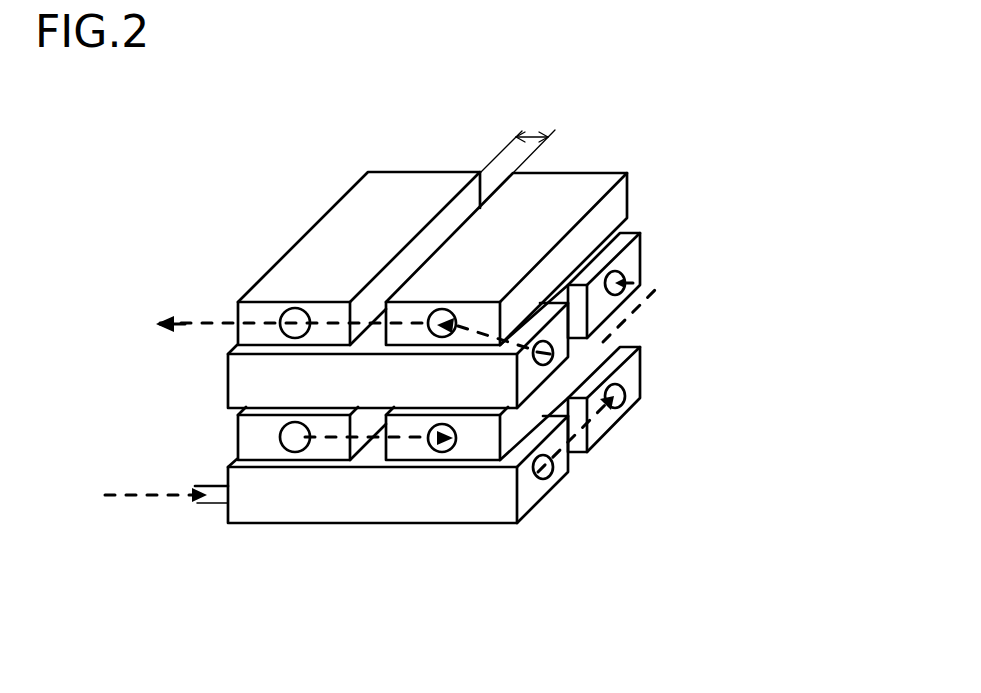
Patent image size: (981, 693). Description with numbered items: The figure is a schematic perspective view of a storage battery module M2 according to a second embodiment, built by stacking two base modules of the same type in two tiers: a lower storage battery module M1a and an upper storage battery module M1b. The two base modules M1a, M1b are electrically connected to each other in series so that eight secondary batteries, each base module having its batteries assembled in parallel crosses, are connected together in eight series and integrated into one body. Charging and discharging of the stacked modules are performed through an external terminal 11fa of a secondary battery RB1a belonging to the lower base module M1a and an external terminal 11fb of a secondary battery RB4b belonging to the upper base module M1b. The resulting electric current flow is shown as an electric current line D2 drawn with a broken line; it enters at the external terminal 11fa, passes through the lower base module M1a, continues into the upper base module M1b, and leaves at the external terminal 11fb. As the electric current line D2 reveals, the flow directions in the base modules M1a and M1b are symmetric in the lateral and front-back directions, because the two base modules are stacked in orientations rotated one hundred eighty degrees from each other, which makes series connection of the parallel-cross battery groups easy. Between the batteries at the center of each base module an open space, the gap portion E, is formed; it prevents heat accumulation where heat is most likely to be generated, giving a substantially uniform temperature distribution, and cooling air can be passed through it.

The storage battery module M2 is at (712, 161).
The upper storage battery module M1b is at (672, 256).
The lower storage battery module M1a is at (672, 368).
The secondary battery RB4b is at (338, 228).
The secondary battery RB1a is at (480, 508).
The external terminal 11fb is at (292, 308).
The external terminal 11fa is at (213, 497).
The electric current line D2 is at (200, 322).
The gap portion E is at (517, 134).